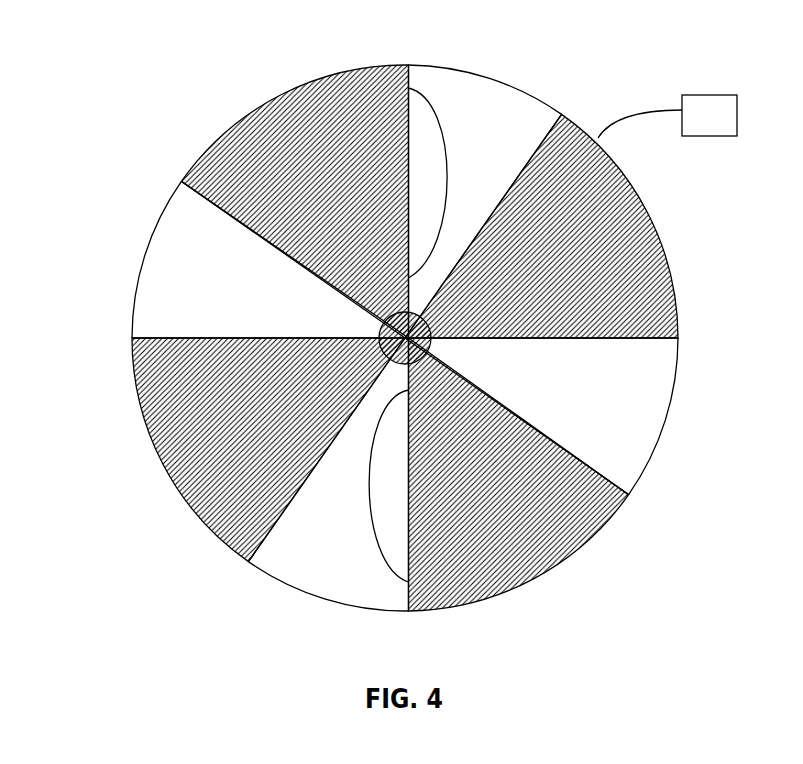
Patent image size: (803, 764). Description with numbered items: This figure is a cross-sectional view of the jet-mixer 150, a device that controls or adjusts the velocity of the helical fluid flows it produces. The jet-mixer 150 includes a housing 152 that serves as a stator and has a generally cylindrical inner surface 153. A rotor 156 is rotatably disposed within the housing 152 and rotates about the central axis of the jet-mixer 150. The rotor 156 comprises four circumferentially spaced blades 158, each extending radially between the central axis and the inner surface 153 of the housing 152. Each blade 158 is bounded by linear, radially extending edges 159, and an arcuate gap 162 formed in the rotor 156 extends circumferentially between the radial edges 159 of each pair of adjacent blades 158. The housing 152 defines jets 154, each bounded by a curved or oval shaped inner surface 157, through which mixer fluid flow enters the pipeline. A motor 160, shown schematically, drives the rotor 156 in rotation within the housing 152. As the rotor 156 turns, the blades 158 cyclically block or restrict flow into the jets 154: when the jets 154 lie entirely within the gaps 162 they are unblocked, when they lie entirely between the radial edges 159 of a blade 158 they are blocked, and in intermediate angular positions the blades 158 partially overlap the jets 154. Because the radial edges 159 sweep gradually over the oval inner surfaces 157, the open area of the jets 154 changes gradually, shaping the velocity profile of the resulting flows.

The jet-mixer 150 is at (150, 42).
The housing 152 is at (405, 343).
The inner surface 153 is at (645, 451).
The jets 154 is at (458, 304).
The rotor 156 is at (157, 460).
The inner surface 157 is at (443, 127).
The blades 158 is at (290, 97).
The radial edges 159 is at (273, 247).
The motor 160 is at (707, 98).
The arcuate gap 162 is at (543, 113).